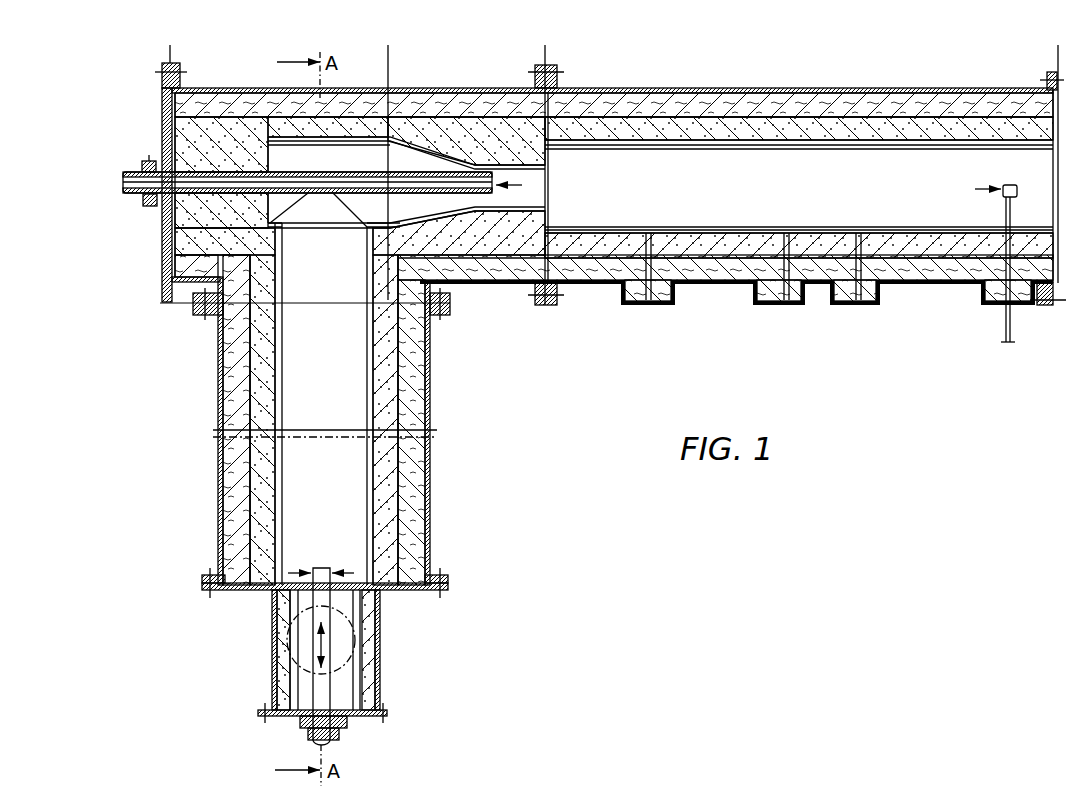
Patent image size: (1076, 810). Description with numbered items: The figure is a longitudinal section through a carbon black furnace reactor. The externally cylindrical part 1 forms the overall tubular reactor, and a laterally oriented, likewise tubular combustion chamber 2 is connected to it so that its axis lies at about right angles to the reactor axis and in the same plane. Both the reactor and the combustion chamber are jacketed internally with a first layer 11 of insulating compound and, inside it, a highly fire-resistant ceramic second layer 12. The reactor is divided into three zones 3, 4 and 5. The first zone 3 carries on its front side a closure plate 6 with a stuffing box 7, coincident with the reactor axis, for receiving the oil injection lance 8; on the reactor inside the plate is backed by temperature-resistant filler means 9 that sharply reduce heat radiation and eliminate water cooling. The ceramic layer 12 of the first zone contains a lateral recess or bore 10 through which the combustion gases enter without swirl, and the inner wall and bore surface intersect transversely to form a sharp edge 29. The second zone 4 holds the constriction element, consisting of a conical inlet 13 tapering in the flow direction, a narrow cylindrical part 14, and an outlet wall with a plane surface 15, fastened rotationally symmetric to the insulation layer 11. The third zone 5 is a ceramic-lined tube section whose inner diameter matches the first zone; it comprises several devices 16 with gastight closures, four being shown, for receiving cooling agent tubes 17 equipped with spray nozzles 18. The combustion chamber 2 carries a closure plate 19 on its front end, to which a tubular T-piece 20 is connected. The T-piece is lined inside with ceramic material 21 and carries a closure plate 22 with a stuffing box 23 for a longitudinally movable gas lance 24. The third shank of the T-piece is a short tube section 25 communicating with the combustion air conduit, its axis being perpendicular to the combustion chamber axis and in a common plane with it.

The carbon black reactor 1 is at (775, 88).
The combustion chamber 2 is at (218, 385).
The first reactor zone 3 is at (388, 45).
The second reactor zone 4 is at (545, 45).
The third reactor zone 5 is at (1057, 45).
The closure plate 6 is at (176, 262).
The stuffing box 7 is at (145, 162).
The oil injection lance 8 is at (124, 180).
The filler means 9 is at (166, 221).
The lateral recess or bore 10 is at (345, 290).
The first layer 11 is at (864, 102).
The second layer 12 is at (930, 125).
The conical inlet 13 is at (412, 177).
The cylindrical part 14 is at (522, 188).
The plane surface 15 is at (546, 222).
The devices 16 is at (648, 302).
The cooling agent tubes 17 is at (1013, 324).
The spray nozzles 18 is at (1003, 198).
The closure plate 19 is at (425, 590).
The tubular T-piece 20 is at (272, 658).
The ceramic material 21 is at (277, 692).
The closure plate 22 is at (372, 716).
The stuffing box 23 is at (300, 722).
The gas lance 24 is at (325, 690).
The tube section 25 is at (327, 554).
The sharp edge 29 is at (374, 219).